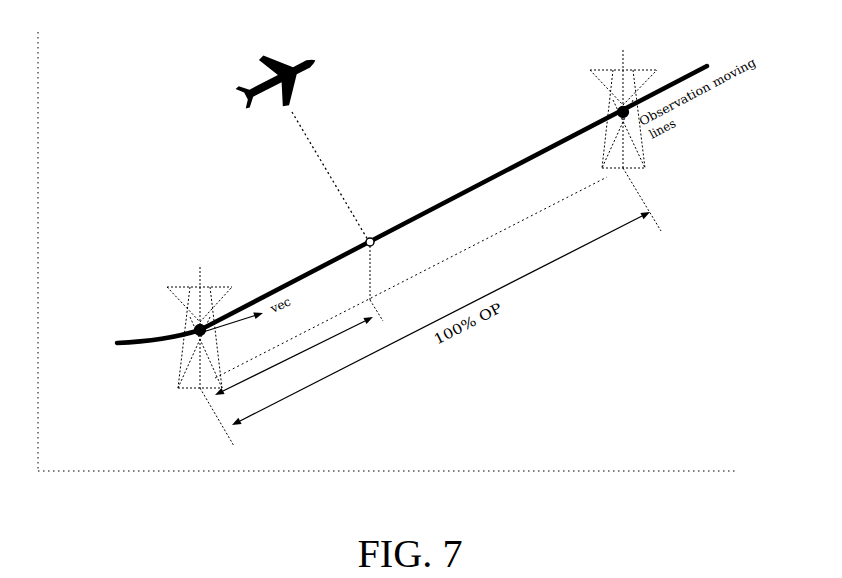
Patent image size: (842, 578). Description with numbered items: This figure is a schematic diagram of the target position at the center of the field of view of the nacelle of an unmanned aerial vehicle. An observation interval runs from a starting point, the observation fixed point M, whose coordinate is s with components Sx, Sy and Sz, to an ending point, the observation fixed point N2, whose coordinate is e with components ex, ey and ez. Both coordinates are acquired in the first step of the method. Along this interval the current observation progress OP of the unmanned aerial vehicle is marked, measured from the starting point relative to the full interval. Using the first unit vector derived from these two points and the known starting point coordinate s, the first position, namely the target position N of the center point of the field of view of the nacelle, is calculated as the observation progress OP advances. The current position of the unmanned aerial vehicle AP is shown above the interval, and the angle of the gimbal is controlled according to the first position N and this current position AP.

The current position of the unmanned aerial vehicle AP is at (261, 137).
The target position of the center point of the field of view of the nacelle N is at (375, 224).
The starting point of the observation interval M is at (159, 356).
The ending point of the observation interval N2 is at (588, 140).
The observation progress OP is at (294, 356).